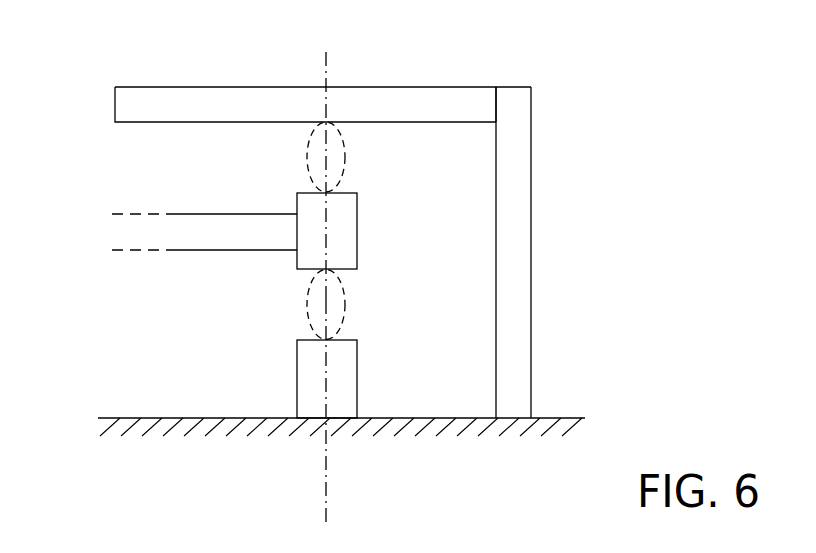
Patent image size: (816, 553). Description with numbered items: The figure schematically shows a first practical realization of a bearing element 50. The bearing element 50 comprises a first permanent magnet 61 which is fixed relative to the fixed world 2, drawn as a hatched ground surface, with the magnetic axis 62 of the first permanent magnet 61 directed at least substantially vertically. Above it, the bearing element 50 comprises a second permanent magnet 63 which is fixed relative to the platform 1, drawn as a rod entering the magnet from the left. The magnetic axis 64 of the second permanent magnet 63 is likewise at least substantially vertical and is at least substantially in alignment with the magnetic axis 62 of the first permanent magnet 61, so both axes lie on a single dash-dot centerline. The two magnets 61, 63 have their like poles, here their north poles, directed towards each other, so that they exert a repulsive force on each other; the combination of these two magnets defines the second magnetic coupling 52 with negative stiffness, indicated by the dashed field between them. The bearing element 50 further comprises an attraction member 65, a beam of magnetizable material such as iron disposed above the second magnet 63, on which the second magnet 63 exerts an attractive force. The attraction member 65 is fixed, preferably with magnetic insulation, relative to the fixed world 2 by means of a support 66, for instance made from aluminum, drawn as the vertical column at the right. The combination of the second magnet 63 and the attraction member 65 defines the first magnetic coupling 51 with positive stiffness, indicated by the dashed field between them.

The platform 1 is at (207, 214).
The fixed world 2 is at (568, 416).
The bearing element 50 is at (124, 326).
The first magnetic coupling 51 is at (345, 156).
The second magnetic coupling 52 is at (345, 306).
The first permanent magnet 61 is at (297, 381).
The magnetic axis of the first permanent magnet 62 is at (326, 518).
The second permanent magnet 63 is at (297, 258).
The magnetic axis of the second permanent magnet 64 is at (326, 54).
The attraction member 65 is at (188, 87).
The support 66 is at (531, 192).